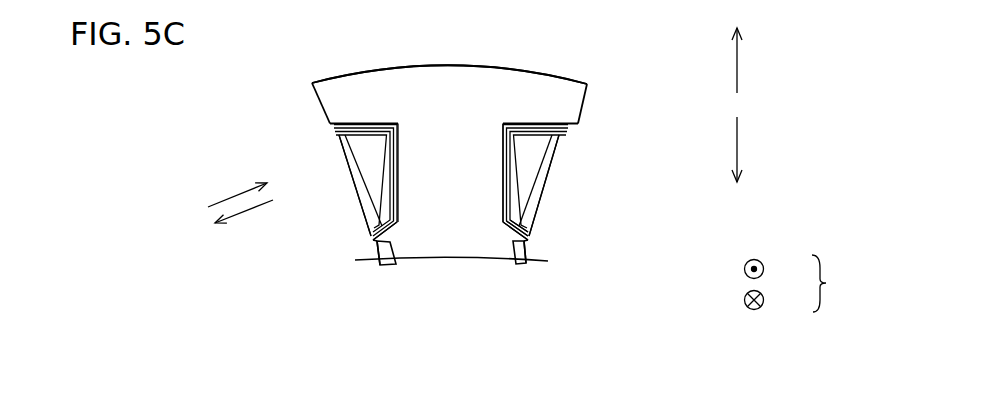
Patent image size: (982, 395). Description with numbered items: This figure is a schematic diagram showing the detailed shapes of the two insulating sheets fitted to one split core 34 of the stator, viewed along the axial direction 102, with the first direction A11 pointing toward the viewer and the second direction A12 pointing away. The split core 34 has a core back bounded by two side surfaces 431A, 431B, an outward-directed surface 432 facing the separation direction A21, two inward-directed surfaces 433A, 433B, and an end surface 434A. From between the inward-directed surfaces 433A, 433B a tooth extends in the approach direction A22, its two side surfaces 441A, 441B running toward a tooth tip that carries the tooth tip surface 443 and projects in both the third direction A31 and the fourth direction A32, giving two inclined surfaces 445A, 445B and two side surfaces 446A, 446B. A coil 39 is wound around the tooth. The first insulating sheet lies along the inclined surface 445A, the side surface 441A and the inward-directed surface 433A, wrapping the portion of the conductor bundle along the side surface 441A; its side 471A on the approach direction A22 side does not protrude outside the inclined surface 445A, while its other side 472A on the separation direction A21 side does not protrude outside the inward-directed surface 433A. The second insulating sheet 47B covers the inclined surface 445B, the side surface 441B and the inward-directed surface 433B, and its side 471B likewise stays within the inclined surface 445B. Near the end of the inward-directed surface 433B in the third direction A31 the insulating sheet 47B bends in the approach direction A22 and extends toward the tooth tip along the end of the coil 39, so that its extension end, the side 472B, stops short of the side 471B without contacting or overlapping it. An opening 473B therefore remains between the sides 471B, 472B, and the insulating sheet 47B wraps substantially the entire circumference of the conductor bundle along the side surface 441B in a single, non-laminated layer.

The split core 34 is at (508, 60).
The coil 39 is at (357, 188).
The outward-directed surface 432 is at (555, 72).
The side surface 431A is at (312, 107).
The side surface 431B is at (588, 100).
The inward-directed surface 433A is at (352, 123).
The inward-directed surface 433B is at (517, 123).
The end surface 434A is at (367, 86).
The side surface 441A is at (400, 217).
The side surface 441B is at (500, 150).
The tooth tip surface 443 is at (497, 260).
The inclined surface 445A is at (386, 265).
The inclined surface 445B is at (520, 268).
The side surface 446A is at (378, 254).
The side surface 446B is at (525, 256).
The insulating sheet 47B is at (574, 130).
The side 471A is at (374, 237).
The side 471B is at (523, 256).
The side 472A is at (332, 128).
The side 472B is at (538, 238).
The opening 473B is at (540, 242).
The axial direction 102 is at (841, 283).
The first direction A11 is at (777, 273).
The second direction A12 is at (777, 302).
The separation direction A21 is at (738, 68).
The approach direction A22 is at (738, 140).
The third direction A31 is at (238, 197).
The fourth direction A32 is at (248, 210).